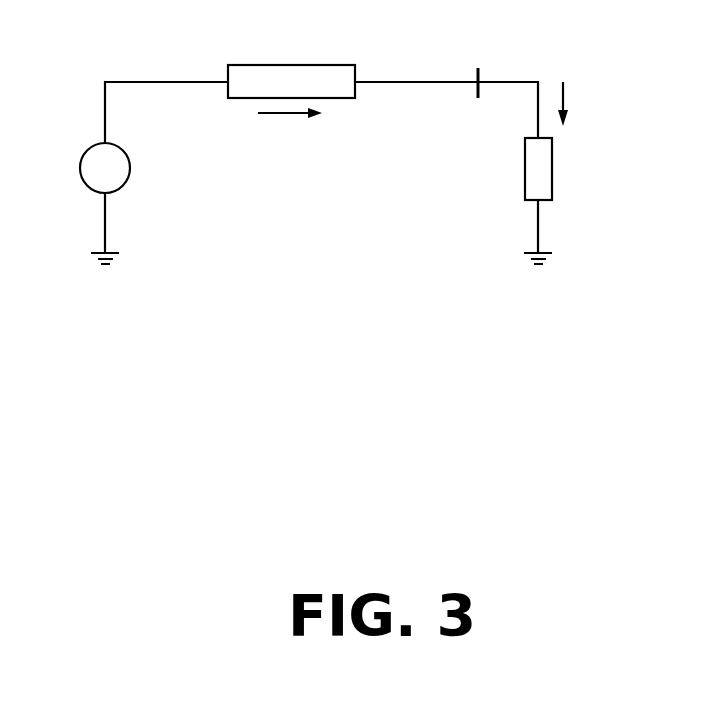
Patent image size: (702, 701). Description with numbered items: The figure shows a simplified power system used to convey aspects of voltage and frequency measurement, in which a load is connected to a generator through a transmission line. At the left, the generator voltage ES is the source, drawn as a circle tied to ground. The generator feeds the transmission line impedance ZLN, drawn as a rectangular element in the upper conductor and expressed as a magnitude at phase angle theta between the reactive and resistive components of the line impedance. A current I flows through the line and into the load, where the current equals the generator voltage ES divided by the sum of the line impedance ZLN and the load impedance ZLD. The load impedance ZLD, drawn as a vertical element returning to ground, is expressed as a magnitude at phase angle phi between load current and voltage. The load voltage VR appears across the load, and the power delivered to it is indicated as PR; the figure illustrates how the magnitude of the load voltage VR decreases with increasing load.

The generator voltage ES is at (88, 168).
The transmission line impedance ZLN is at (291, 56).
The current flowing through the line and load I is at (290, 126).
The load voltage VR is at (481, 58).
The receiving end power P_R + jQ_R PR is at (615, 104).
The load impedance ZLD is at (581, 169).